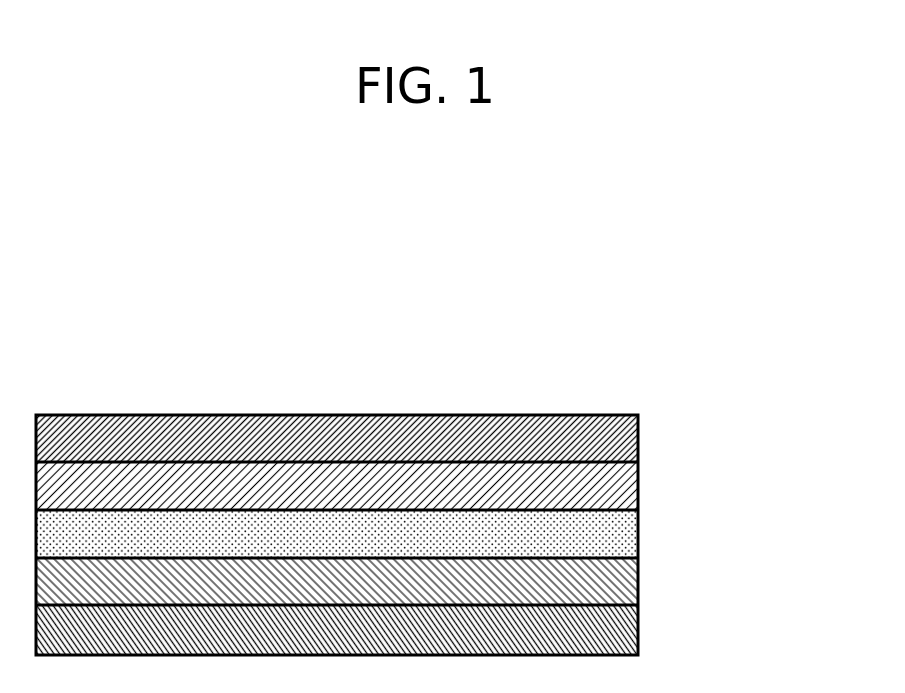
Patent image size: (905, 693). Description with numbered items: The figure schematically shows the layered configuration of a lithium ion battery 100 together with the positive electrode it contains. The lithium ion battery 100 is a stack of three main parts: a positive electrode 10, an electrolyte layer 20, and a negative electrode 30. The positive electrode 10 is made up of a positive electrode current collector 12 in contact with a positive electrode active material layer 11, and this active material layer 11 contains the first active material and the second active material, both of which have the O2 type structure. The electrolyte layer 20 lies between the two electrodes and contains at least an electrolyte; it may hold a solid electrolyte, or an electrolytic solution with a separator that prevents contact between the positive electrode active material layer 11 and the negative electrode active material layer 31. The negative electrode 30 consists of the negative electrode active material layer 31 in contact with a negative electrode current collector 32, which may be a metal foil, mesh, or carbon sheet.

The lithium ion battery 100 is at (362, 360).
The positive electrode 10 is at (435, 462).
The positive electrode current collector 12 is at (627, 437).
The positive electrode active material layer 11 is at (627, 485).
The electrolyte layer 20 is at (625, 538).
The negative electrode 30 is at (435, 607).
The negative electrode active material layer 31 is at (627, 582).
The negative electrode current collector 32 is at (394, 630).